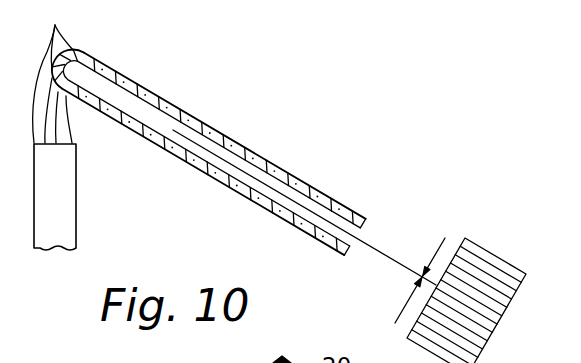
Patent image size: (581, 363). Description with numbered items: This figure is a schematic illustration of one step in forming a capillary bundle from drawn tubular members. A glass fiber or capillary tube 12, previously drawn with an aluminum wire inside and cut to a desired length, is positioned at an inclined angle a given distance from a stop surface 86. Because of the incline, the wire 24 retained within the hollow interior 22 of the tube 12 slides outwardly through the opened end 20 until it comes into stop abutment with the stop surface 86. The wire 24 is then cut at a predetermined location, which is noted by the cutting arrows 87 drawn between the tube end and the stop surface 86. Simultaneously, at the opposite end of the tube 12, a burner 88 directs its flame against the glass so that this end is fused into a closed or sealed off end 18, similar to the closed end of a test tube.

The capillary tube 12 is at (180, 107).
The closed end 18 is at (73, 49).
The opened end 20 is at (353, 253).
The hollow interior 22 is at (194, 159).
The wire 24 is at (288, 221).
The stop surface 86 is at (465, 238).
The cutting arrows 87 is at (437, 252).
The burner 88 is at (70, 212).